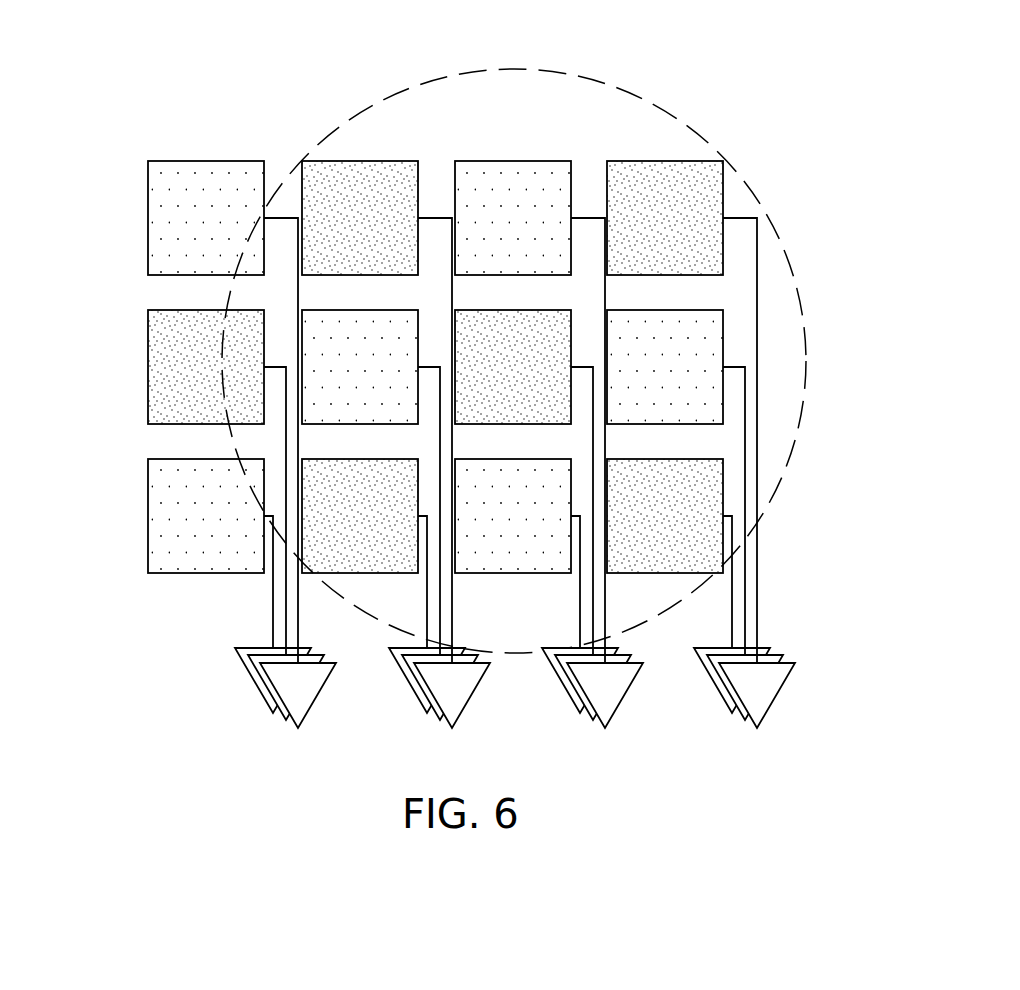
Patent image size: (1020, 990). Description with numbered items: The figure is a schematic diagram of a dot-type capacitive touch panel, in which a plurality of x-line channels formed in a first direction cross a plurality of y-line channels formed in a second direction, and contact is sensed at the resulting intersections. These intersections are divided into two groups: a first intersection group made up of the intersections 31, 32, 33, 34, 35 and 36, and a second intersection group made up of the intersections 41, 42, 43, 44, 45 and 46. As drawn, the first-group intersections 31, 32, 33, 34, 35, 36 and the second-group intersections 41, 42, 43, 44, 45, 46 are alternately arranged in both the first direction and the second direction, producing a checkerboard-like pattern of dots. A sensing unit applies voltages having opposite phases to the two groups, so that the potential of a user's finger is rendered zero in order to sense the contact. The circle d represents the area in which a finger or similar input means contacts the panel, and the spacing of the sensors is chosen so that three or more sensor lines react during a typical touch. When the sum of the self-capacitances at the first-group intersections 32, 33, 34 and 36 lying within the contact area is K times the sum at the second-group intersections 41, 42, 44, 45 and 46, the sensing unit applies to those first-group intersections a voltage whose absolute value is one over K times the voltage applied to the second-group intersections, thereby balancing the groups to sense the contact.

The intersection of first intersection group 31 is at (205, 172).
The intersection of first intersection group 32 is at (512, 170).
The intersection of first intersection group 33 is at (407, 325).
The intersection of first intersection group 34 is at (713, 325).
The intersection of first intersection group 35 is at (158, 522).
The intersection of first intersection group 36 is at (525, 465).
The intersection of second intersection group 41 is at (358, 170).
The intersection of second intersection group 42 is at (665, 168).
The intersection of second intersection group 43 is at (253, 325).
The intersection of second intersection group 44 is at (557, 325).
The intersection of second intersection group 45 is at (348, 462).
The intersection of second intersection group 46 is at (713, 490).
The circle d is at (793, 270).